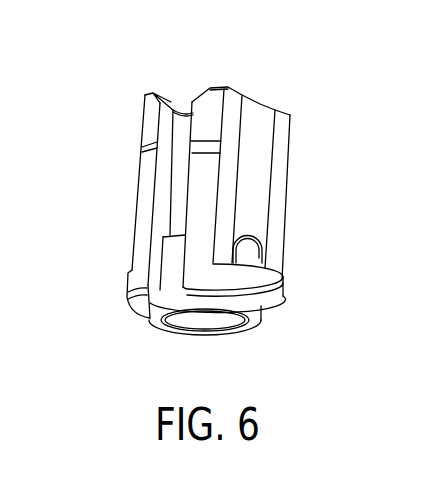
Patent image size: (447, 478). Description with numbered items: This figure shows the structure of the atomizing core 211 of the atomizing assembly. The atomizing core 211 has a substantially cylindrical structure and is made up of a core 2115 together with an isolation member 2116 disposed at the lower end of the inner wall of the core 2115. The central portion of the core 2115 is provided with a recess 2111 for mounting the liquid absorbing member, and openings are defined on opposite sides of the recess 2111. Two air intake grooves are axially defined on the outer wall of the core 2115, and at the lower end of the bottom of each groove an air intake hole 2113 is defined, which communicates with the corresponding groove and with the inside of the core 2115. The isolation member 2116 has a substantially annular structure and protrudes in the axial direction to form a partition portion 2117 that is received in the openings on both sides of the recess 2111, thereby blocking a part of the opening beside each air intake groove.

The atomizing core 211 is at (233, 75).
The recess 2111 is at (182, 167).
The air intake hole 2113 is at (242, 252).
The core 2115 is at (267, 288).
The isolation member 2116 is at (150, 318).
The partition portion 2117 is at (175, 253).